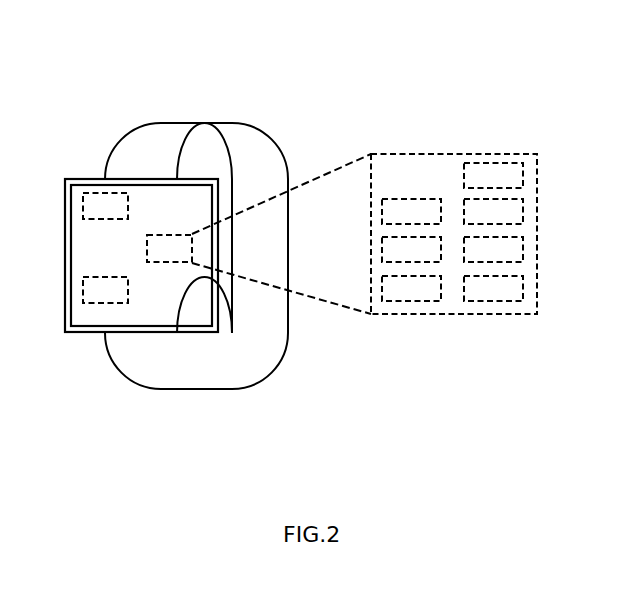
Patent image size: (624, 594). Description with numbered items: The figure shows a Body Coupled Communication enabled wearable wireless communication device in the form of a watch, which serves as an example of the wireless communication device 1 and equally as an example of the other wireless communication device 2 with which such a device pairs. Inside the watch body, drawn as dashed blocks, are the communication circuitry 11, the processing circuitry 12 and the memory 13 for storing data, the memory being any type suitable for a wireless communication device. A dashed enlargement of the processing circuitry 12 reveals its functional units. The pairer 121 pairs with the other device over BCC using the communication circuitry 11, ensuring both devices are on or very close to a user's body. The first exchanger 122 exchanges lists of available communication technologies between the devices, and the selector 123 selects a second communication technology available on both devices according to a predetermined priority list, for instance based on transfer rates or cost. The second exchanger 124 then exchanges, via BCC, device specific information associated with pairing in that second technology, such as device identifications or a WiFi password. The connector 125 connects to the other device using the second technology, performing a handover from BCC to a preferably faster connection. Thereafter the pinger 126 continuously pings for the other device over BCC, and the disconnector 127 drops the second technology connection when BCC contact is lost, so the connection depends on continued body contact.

The wireless communication device 1 is at (128, 86).
The other wireless communication device 2 is at (301, 256).
The communication circuitry 11 is at (105, 206).
The processing circuitry 12 is at (342, 234).
The memory 13 is at (105, 290).
The pairer 121 is at (493, 175).
The first exchanger 122 is at (411, 211).
The selector 123 is at (493, 211).
The second exchanger 124 is at (411, 249).
The connector 125 is at (493, 249).
The pinger 126 is at (411, 288).
The disconnector 127 is at (493, 288).